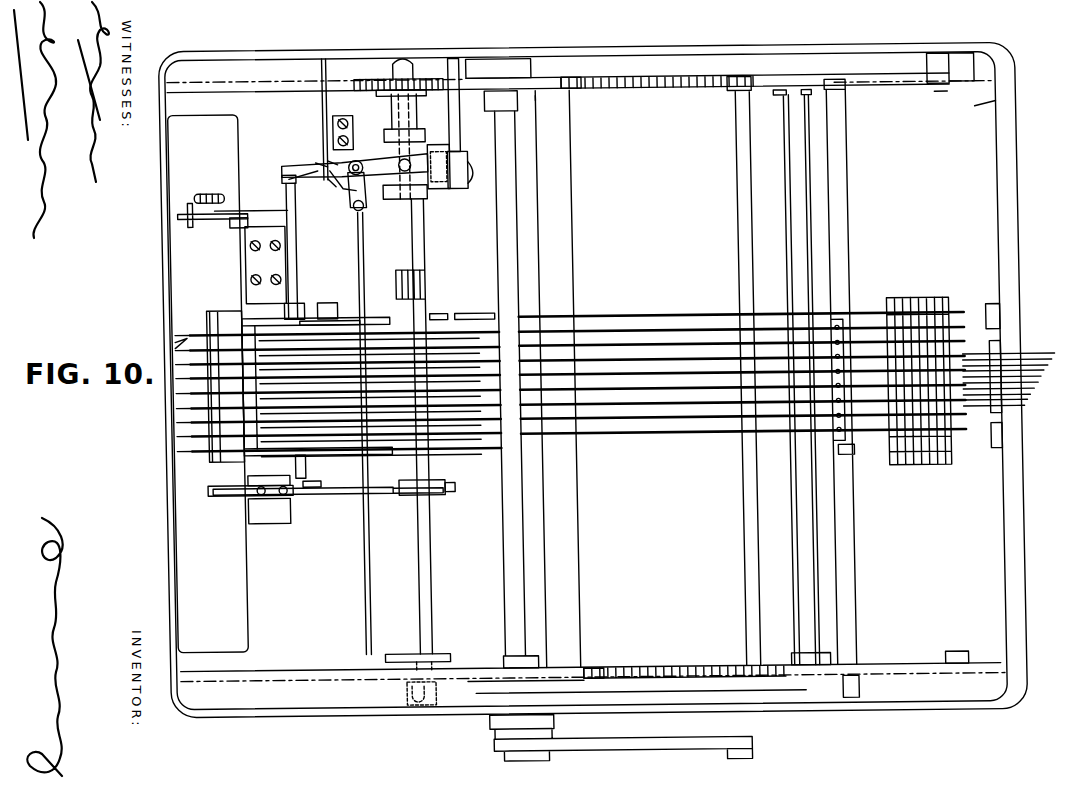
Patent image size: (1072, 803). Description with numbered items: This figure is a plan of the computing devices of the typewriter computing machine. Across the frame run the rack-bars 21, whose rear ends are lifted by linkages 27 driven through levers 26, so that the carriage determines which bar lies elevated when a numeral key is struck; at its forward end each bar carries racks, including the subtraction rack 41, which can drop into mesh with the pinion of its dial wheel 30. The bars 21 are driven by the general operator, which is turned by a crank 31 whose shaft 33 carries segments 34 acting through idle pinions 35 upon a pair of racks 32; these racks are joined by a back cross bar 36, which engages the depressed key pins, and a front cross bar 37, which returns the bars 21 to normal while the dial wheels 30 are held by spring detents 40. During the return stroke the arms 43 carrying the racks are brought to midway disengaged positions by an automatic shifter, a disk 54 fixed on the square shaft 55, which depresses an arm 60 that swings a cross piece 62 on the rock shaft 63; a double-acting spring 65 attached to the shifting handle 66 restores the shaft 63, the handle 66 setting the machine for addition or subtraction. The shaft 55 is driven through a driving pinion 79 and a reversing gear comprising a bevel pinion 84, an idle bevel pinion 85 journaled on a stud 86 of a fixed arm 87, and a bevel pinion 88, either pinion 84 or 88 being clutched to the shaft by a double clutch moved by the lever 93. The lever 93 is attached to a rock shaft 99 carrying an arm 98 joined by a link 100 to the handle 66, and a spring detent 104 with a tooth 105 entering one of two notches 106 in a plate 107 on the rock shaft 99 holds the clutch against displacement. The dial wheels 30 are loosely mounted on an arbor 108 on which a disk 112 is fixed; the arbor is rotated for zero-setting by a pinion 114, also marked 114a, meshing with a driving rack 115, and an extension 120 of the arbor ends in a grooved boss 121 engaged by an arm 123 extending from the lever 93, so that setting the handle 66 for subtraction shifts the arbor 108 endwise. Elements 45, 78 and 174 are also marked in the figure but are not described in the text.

The bar 21 is at (630, 330).
The lever 26 is at (1032, 358).
The linkage 27 is at (936, 306).
The dial wheel 30 is at (317, 385).
The crank 31 is at (623, 743).
The rack 32 is at (648, 91).
The shaft 33 is at (502, 632).
The segment 34 is at (549, 78).
The idle pinion 35 is at (581, 78).
The back cross bar 36 is at (821, 379).
The front cross bar 37 is at (549, 186).
The spring detent 40 is at (462, 446).
The subtraction rack 41 is at (341, 456).
The arm 43 is at (241, 345).
The key stop 45 is at (176, 339).
The disk 54 is at (444, 488).
The square shaft 55 is at (422, 117).
The arm 60 is at (328, 504).
The cross piece 62 is at (226, 494).
The rock shaft 63 is at (226, 272).
The spring 65 is at (213, 190).
The shifting handle 66 is at (193, 216).
The gear hub 78 is at (425, 94).
The driving pinion 79 is at (422, 78).
The bevel pinion 84 is at (447, 142).
The idle bevel pinion 85 is at (445, 188).
The stud 86 is at (475, 180).
The fixed arm 87 is at (464, 116).
The bevel pinion 88 is at (373, 413).
The shifting lever 93 is at (354, 167).
The arm 98 is at (352, 186).
The rock shaft 99 is at (361, 158).
The link 100 is at (288, 207).
The spring detent 104 is at (328, 116).
The tooth 105 is at (322, 162).
The notch 106 is at (338, 160).
The plate 107 is at (333, 178).
The arbor 108 is at (316, 486).
The disk 112 is at (293, 302).
The pinion 114 is at (439, 312).
The pinion 114a is at (331, 304).
The driving rack 115 is at (485, 305).
The extension 120 is at (299, 243).
The boss 121 is at (289, 172).
The arm 123 is at (320, 163).
The bar 174 is at (319, 319).